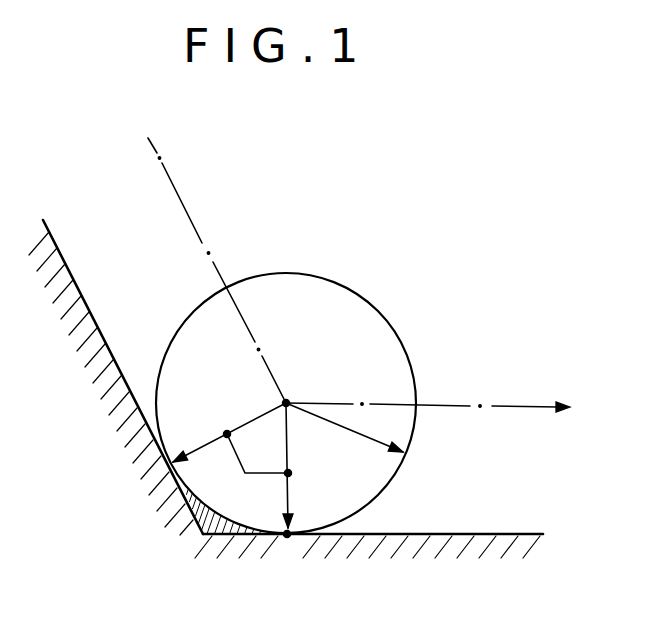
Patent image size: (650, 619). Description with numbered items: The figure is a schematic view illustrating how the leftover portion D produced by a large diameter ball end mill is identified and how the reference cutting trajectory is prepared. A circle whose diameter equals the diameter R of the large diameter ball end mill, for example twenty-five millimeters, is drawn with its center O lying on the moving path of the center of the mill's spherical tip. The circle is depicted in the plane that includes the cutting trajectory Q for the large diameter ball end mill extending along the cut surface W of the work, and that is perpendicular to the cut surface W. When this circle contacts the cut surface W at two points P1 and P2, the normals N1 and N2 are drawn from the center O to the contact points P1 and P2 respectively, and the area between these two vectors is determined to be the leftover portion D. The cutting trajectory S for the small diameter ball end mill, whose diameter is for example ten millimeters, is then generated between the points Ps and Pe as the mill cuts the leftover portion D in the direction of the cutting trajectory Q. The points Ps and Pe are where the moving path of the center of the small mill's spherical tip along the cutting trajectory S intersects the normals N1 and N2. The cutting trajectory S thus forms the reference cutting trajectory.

The leftover portion D is at (202, 530).
The cut surface W is at (508, 533).
The cutting trajectory for the large diameter ball end mill Q is at (518, 401).
The vector (normal) N1 is at (255, 414).
The vector (normal) N2 is at (290, 500).
The diameter of the large diameter ball end mill R is at (344, 435).
The cutting trajectory for the small diameter ball end mill S is at (255, 477).
The center of the circle O is at (293, 391).
The start point of the cutting trajectory Ps is at (217, 422).
The end point of the cutting trajectory Pe is at (304, 496).
The contact point P1 is at (160, 468).
The contact point P2 is at (292, 552).